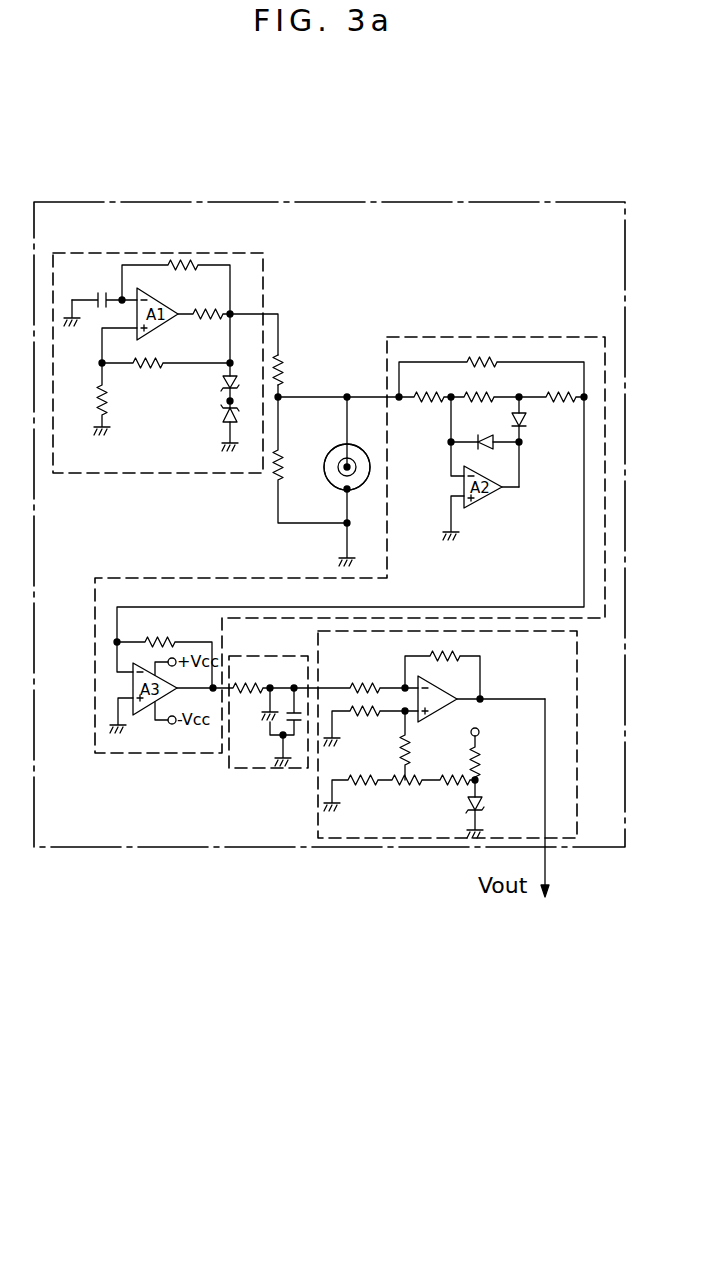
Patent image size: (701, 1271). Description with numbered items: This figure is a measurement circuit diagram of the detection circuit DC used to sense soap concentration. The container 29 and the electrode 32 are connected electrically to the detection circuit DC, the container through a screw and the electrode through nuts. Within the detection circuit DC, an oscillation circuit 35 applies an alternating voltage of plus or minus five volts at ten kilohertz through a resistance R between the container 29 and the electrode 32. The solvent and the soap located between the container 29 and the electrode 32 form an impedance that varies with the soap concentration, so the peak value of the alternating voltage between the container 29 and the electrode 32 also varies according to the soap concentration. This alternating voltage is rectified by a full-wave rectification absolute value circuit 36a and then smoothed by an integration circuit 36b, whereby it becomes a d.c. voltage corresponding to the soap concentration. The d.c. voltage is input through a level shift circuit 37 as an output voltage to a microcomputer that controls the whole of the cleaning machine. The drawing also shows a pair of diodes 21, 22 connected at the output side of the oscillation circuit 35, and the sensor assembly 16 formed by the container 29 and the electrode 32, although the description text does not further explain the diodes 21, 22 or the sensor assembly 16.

The detection circuit DC is at (342, 202).
The oscillation circuit 35 is at (187, 253).
The full-wave rectification absolute value circuit 36a is at (461, 337).
The integration circuit 36b is at (250, 656).
The level shift circuit 37 is at (577, 650).
The zener diode 21 is at (210, 385).
The zener diode 22 is at (210, 426).
The resistance R is at (289, 371).
The electromagnetic sensor 16 is at (341, 466).
The electrode 32 is at (330, 485).
The container 29 is at (363, 475).